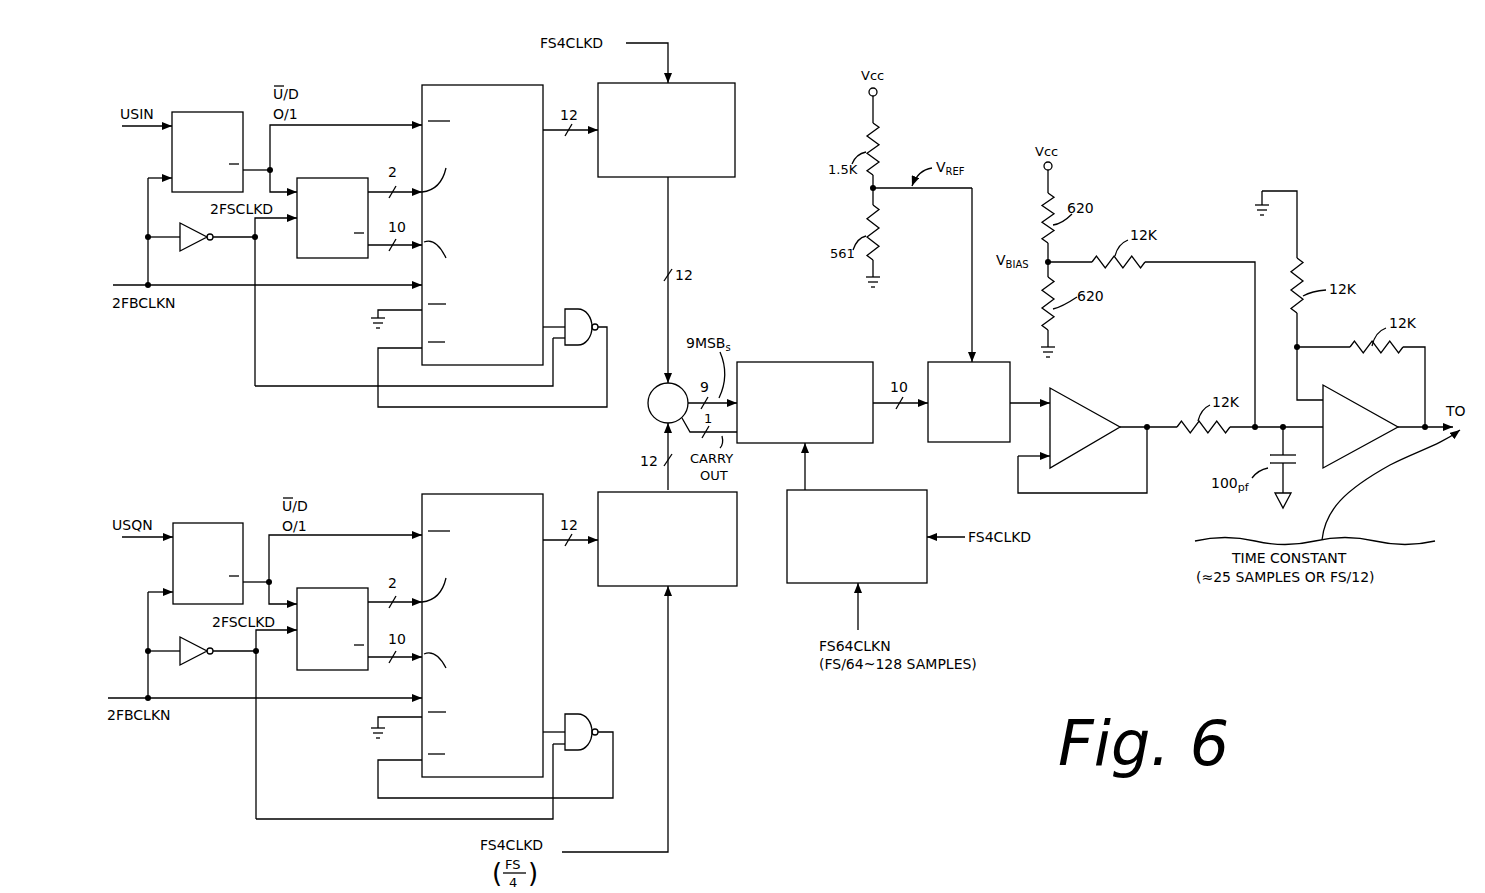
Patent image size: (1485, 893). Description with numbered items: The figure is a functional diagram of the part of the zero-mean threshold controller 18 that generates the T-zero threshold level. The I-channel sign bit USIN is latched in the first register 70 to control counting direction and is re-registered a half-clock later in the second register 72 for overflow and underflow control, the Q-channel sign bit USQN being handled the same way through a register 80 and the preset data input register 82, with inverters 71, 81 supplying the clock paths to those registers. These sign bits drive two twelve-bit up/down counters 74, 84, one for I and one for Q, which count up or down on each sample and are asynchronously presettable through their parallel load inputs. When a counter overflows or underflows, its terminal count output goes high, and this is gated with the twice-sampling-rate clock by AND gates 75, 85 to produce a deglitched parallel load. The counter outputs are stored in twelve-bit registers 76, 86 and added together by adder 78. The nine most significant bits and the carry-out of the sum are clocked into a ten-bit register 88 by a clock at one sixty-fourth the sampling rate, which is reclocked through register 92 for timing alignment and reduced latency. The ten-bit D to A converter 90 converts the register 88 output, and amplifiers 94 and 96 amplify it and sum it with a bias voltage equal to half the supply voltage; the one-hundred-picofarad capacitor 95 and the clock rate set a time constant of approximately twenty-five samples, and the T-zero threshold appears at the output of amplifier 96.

The zero-mean threshold controller 18 is at (1117, 111).
The register 1 70 is at (213, 112).
The inverter 71 is at (195, 248).
The register 2 72 is at (330, 178).
The 12-bit up/down counter 74 is at (458, 85).
The AND gate 75 is at (583, 309).
The 12-bit register 76 is at (702, 177).
The adder 78 is at (650, 389).
The 1-bit register 3 80 is at (213, 523).
The inverter 81 is at (195, 662).
The preset data input register 82 is at (330, 588).
The 12-bit up/down counter 84 is at (458, 494).
The AND gate 85 is at (583, 714).
The 12-bit register 86 is at (700, 586).
The 10-bit register 88 is at (795, 362).
The 10-bit D to A converter 90 is at (950, 442).
The register 92 is at (886, 490).
The amplifier 94 is at (1085, 407).
The 100pf capacitor 95 is at (1290, 470).
The amplifier 96 is at (1358, 407).